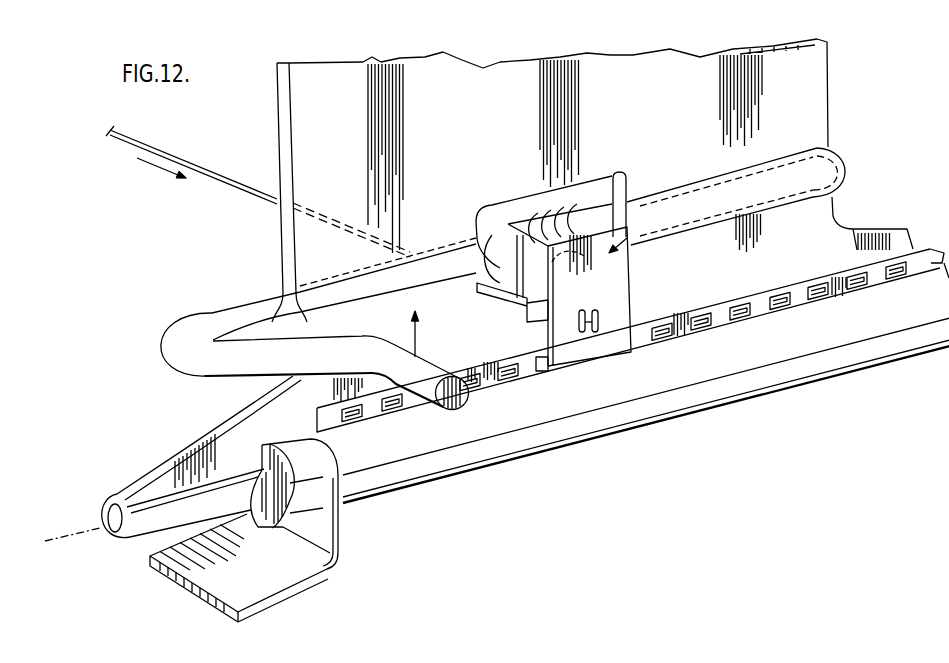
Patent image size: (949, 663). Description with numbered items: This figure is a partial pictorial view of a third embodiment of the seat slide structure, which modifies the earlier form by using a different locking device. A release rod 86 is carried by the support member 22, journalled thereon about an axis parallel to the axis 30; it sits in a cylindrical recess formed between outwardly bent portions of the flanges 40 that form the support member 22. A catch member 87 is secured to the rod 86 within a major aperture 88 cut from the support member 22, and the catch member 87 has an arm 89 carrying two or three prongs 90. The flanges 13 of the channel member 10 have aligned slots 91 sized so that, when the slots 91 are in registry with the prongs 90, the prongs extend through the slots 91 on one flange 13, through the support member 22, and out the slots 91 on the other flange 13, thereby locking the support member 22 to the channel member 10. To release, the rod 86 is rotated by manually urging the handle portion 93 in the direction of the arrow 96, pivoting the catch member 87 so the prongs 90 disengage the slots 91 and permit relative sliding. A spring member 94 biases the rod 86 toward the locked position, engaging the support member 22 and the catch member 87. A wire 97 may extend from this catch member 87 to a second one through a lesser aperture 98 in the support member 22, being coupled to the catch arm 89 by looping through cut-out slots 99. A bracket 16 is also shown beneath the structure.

The channel member 10 is at (645, 394).
The flanges 13 is at (370, 418).
The bracket 16 is at (294, 566).
The support member 22 is at (542, 140).
The axis 30 is at (90, 521).
The flanges 40 is at (277, 100).
The release rod 86 is at (218, 318).
The catch member 87 is at (650, 215).
The major aperture 88 is at (611, 172).
The arm 89 is at (621, 297).
The prongs 90 is at (637, 391).
The slots 91 is at (522, 433).
The handle portion 93 is at (392, 348).
The spring member 94 is at (547, 203).
The arrow 96 is at (420, 338).
The wire 97 is at (178, 156).
The lesser aperture 98 is at (527, 321).
The cut-out slots 99 is at (598, 325).